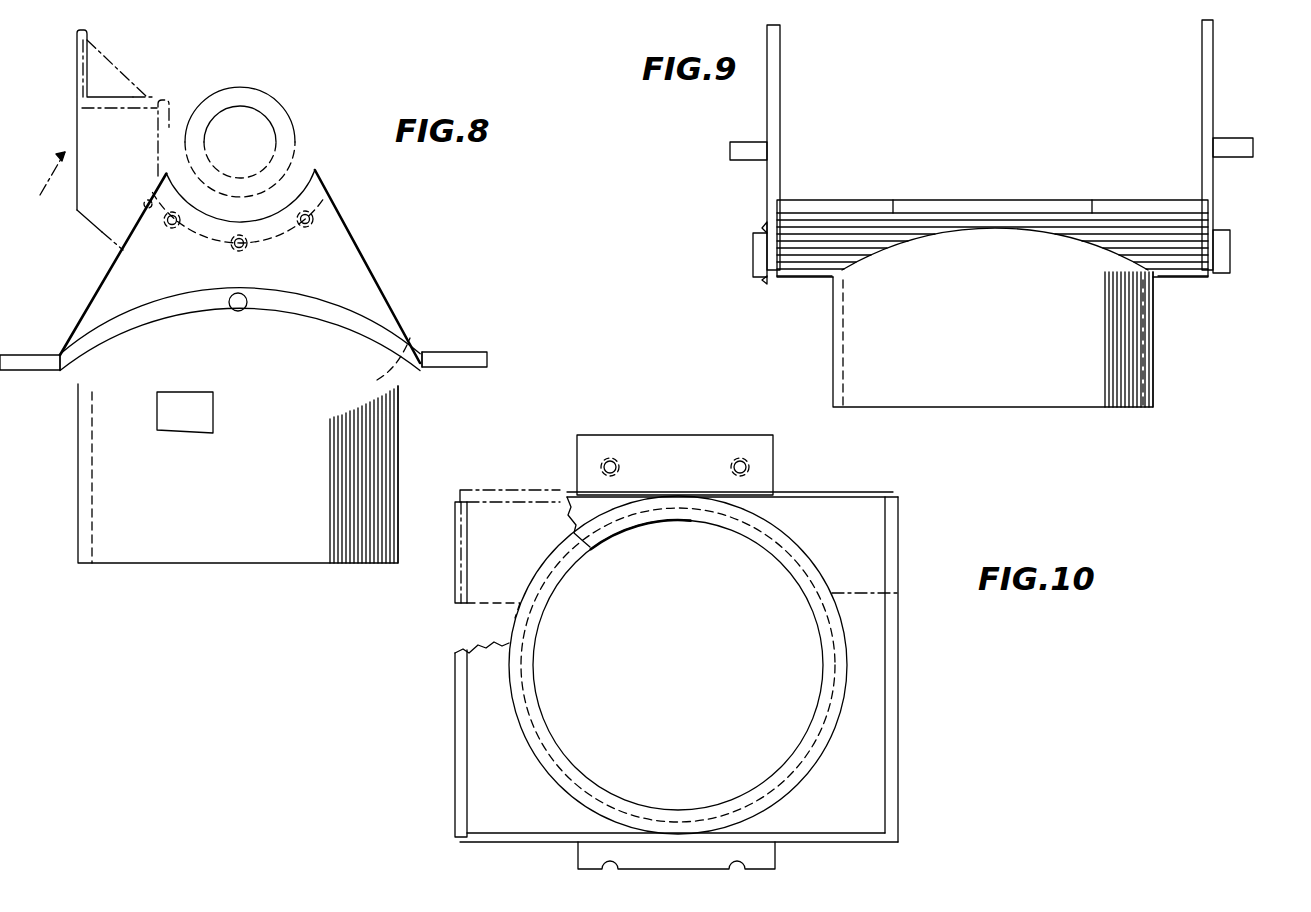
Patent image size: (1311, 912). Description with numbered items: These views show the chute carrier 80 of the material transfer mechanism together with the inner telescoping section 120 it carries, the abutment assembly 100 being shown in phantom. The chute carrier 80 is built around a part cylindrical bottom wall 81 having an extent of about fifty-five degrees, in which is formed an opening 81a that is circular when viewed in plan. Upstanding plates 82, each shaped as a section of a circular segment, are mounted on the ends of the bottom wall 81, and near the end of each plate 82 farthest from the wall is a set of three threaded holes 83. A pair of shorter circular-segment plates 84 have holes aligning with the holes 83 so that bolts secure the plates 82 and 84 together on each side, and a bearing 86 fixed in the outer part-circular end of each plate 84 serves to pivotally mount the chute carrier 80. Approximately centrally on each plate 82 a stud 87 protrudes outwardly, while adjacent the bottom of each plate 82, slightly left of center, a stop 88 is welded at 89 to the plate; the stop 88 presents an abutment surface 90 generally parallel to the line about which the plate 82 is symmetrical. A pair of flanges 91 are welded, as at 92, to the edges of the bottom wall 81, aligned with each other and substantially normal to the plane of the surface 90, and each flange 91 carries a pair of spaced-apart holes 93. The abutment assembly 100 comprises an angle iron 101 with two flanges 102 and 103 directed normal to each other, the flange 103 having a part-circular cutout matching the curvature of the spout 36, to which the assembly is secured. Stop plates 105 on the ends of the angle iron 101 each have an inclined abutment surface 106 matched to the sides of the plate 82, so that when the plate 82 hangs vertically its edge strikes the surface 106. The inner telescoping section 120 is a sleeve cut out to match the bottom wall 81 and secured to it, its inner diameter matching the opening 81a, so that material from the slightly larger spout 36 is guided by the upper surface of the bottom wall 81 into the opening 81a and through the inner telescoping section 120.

In FIG. 10, the spout 36 is at (513, 627).
In FIG. 8, the chute carrier 80 is at (378, 270).
In FIG. 9, the chute carrier 80 is at (1243, 78).
In FIG. 8, the part cylindrical bottom wall 81 is at (408, 378).
In FIG. 9, the part cylindrical bottom wall 81 is at (1155, 222).
In FIG. 10, the part cylindrical bottom wall 81 is at (820, 515).
In FIG. 8, the opening 81a is at (402, 345).
In FIG. 8, the upstanding plates 82 is at (370, 318).
In FIG. 9, the upstanding plates 82 is at (775, 98).
In FIG. 10, the upstanding plates 82 is at (893, 537).
In FIG. 8, the threaded holes 83 is at (312, 220).
In FIG. 8, the plates 84 is at (300, 152).
In FIG. 8, the bearing 86 is at (282, 108).
In FIG. 8, the stud 87 is at (243, 311).
In FIG. 9, the stud 87 is at (742, 150).
In FIG. 8, the stop 88 is at (180, 392).
In FIG. 9, the stop 88 is at (755, 240).
In FIG. 9, the weld 89 is at (765, 228).
In FIG. 8, the abutment surface 90 is at (215, 403).
In FIG. 9, the abutment surface 90 is at (760, 256).
In FIG. 8, the flanges 91 is at (22, 372).
In FIG. 9, the flanges 91 is at (1003, 198).
In FIG. 10, the flanges 91 is at (640, 438).
In FIG. 8, the weld 92 is at (58, 352).
In FIG. 10, the spaced-apart holes 93 is at (608, 458).
In FIG. 8, the abutment assembly 100 is at (37, 188).
In FIG. 8, the angle iron 101 is at (80, 105).
In FIG. 8, the flange 102 is at (77, 62).
In FIG. 10, the flange 102 is at (490, 490).
In FIG. 8, the flange 103 is at (143, 88).
In FIG. 10, the flange 103 is at (488, 612).
In FIG. 8, the stop plates 105 is at (165, 173).
In FIG. 10, the stop plates 105 is at (455, 598).
In FIG. 8, the inclined abutment surface 106 is at (145, 202).
In FIG. 8, the inner telescoping section 120 is at (300, 560).
In FIG. 9, the inner telescoping section 120 is at (1110, 400).
In FIG. 10, the inner telescoping section 120 is at (803, 582).